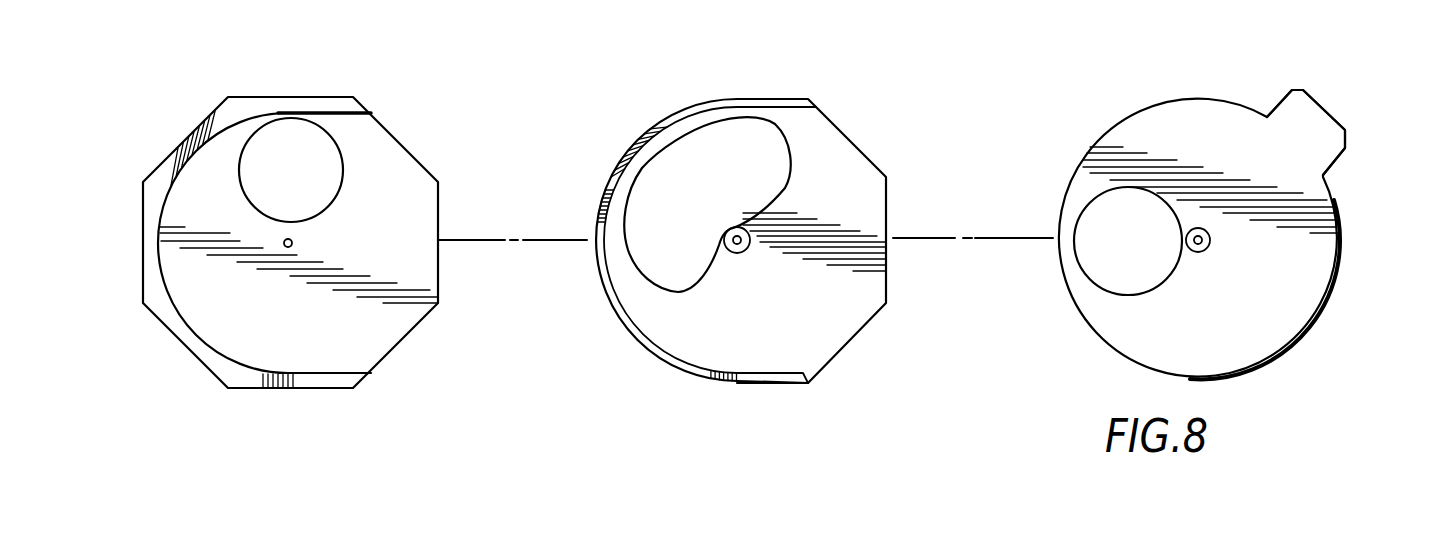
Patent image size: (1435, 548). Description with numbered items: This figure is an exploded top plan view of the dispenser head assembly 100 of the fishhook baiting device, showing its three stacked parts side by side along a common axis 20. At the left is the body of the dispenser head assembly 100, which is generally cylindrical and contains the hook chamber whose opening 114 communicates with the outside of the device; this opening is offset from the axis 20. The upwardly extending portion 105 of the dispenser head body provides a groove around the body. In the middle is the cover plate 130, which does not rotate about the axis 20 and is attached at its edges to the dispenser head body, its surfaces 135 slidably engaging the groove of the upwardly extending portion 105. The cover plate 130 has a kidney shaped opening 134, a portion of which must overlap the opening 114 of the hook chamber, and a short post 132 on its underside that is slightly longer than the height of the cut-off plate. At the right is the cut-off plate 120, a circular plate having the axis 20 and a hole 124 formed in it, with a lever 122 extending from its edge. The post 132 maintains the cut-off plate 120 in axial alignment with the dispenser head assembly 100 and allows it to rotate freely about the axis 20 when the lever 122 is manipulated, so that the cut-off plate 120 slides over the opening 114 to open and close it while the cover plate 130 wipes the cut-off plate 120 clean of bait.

The axis 20 is at (293, 240).
The dispenser head assembly 100 is at (363, 113).
The upwardly extending portion 105 is at (225, 365).
The opening 114 is at (289, 147).
The cover plate 130 is at (767, 388).
The post 132 is at (747, 250).
The kidney shaped opening 134 is at (681, 148).
The surfaces 135 is at (812, 380).
The cut-off plate 120 is at (1288, 307).
The lever 122 is at (1272, 107).
The hole 124 is at (1107, 248).